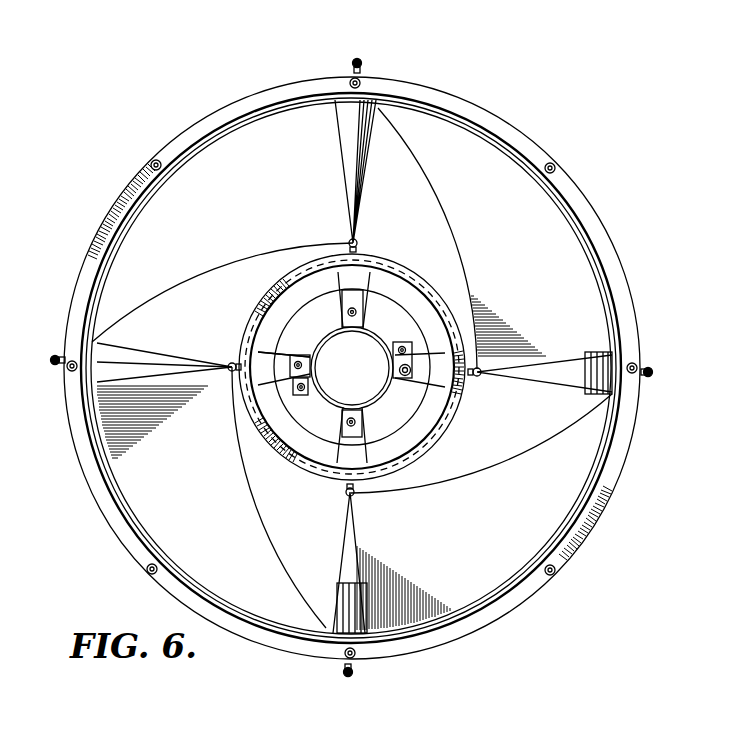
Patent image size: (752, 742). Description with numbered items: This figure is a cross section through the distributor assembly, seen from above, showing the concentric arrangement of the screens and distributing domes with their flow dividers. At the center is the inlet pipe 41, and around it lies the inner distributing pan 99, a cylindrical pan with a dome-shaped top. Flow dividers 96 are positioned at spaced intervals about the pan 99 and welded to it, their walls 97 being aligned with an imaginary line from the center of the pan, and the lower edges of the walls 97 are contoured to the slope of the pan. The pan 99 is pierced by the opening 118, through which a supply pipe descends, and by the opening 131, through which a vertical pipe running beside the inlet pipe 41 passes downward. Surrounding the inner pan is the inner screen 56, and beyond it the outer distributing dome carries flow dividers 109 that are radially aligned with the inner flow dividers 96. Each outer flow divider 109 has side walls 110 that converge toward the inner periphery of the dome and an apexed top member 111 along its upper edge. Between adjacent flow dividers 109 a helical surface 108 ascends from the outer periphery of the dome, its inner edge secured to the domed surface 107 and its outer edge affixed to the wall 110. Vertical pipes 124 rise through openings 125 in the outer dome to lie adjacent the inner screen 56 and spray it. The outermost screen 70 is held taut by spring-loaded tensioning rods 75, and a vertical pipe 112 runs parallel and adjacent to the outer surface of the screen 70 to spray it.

The screen 70 is at (497, 611).
The spring-loaded tensioning rod 75 is at (149, 162).
The vertical pipe 112 is at (366, 61).
The inner screen 56 is at (363, 283).
The inner distributing pan 99 is at (378, 307).
The inlet pipe 41 is at (325, 350).
The flow dividers 96 is at (340, 303).
The opening 131 is at (398, 373).
The opening 118 is at (291, 393).
The walls 97 is at (272, 351).
The domed surface 107 is at (412, 148).
The helical surface 108 is at (321, 406).
The flow dividers 109 is at (343, 135).
The side walls 110 is at (595, 353).
The apexed top member 111 is at (148, 363).
The vertical pipes 124 is at (347, 242).
The openings 125 is at (482, 377).